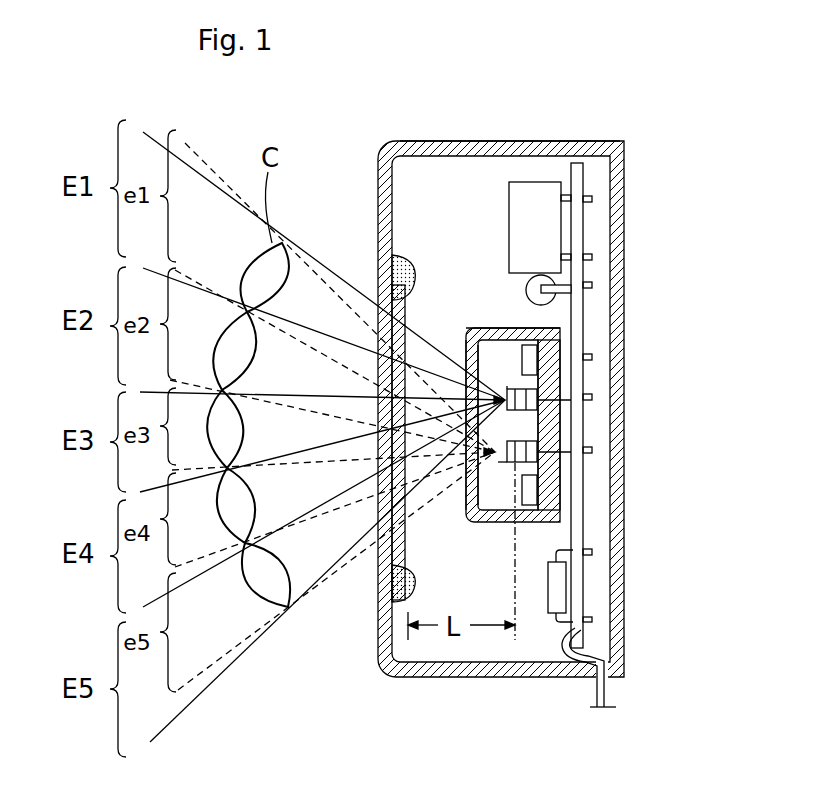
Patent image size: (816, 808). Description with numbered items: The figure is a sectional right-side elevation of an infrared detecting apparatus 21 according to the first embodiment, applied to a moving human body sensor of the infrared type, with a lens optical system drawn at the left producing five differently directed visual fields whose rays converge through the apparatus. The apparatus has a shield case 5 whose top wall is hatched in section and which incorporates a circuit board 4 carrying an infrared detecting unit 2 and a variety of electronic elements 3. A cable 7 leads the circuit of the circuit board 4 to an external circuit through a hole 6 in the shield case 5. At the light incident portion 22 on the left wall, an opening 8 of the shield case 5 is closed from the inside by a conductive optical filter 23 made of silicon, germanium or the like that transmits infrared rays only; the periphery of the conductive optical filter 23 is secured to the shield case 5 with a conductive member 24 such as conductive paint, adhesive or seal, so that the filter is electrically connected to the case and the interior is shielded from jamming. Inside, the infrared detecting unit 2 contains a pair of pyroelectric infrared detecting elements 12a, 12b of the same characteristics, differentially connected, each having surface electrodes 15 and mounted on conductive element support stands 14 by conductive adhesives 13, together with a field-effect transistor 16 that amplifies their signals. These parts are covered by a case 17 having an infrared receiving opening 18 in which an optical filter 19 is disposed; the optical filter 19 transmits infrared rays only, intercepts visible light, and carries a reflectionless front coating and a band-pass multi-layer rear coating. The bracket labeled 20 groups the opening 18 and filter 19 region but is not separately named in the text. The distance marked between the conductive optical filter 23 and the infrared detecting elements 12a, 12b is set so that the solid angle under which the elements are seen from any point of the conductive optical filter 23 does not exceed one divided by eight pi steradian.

The infrared detecting unit 2 is at (489, 320).
The electronic elements 3 is at (552, 300).
The circuit board 4 is at (575, 216).
The shield case 5 is at (478, 142).
The hole 6 is at (626, 665).
The cable 7 is at (610, 698).
The opening 8 is at (378, 305).
The infrared detecting element 12a is at (548, 425).
The infrared detecting element 12b is at (548, 506).
The conductive adhesives 13 is at (548, 395).
The conductive element support stands 14 is at (548, 372).
The surface electrodes 15 is at (505, 386).
The field-effect transistor 16 is at (512, 338).
The case 17 is at (540, 520).
The infrared receiving opening 18 is at (448, 372).
The optical filter 19 is at (466, 335).
The partition wall 20 is at (500, 208).
The infrared detecting apparatus 21 is at (524, 134).
The light incident portion 22 is at (342, 93).
The conductive optical filter 23 is at (393, 300).
The conductive member 24 is at (395, 590).